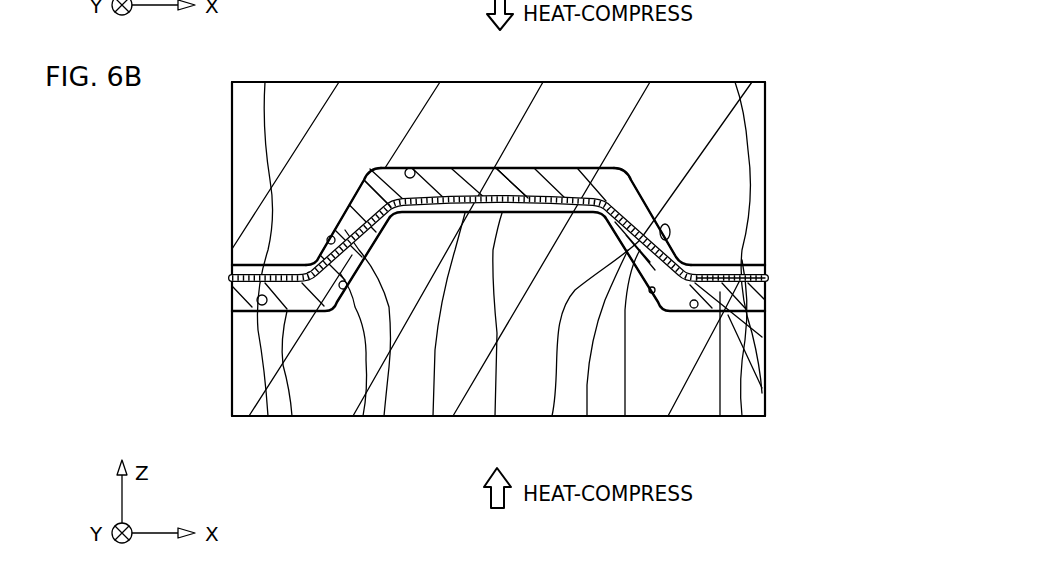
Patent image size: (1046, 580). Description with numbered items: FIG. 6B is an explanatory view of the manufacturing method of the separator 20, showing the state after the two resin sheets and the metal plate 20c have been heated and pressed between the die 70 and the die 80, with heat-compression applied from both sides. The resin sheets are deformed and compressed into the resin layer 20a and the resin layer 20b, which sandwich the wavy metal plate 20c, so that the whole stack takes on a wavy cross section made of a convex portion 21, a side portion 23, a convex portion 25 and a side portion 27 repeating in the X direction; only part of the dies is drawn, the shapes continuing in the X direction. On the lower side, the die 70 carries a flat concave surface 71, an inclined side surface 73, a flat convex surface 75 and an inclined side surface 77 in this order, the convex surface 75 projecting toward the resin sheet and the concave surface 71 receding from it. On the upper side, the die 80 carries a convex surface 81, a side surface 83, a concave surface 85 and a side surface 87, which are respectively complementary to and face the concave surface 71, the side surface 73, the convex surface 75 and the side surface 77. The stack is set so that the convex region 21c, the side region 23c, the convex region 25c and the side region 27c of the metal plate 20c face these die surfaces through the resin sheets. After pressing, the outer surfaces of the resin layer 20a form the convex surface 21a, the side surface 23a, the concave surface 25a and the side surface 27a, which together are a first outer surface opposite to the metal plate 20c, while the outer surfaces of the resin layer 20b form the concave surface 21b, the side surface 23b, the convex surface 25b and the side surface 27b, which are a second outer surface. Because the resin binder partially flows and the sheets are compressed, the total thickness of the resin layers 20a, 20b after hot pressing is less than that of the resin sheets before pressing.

The separator 20 is at (768, 310).
The resin layer 20a is at (767, 303).
The resin layer 20b is at (767, 271).
The metal plate 20c is at (767, 280).
The convex portion 21 is at (232, 258).
The convex surface 21a is at (292, 416).
The concave surface 21b is at (258, 262).
The convex region 21c is at (770, 318).
The side portion 23 is at (352, 249).
The side surface 23a is at (384, 416).
The side surface 23b is at (342, 215).
The side region 23c is at (381, 168).
The convex portion 25 is at (530, 168).
The concave surface 25a is at (495, 416).
The convex surface 25b is at (462, 168).
The convex region 25c is at (500, 170).
The side portion 27 is at (552, 416).
The side surface 27a is at (587, 416).
The side surface 27b is at (660, 245).
The side region 27c is at (628, 235).
The die 70 is at (720, 416).
The concave surface 71 is at (264, 416).
The side surface 73 is at (363, 416).
The convex surface 75 is at (433, 416).
The side surface 77 is at (625, 416).
The die 80 is at (739, 82).
The convex surface 81 is at (265, 84).
The side surface 83 is at (330, 262).
The concave surface 85 is at (413, 198).
The side surface 87 is at (678, 218).